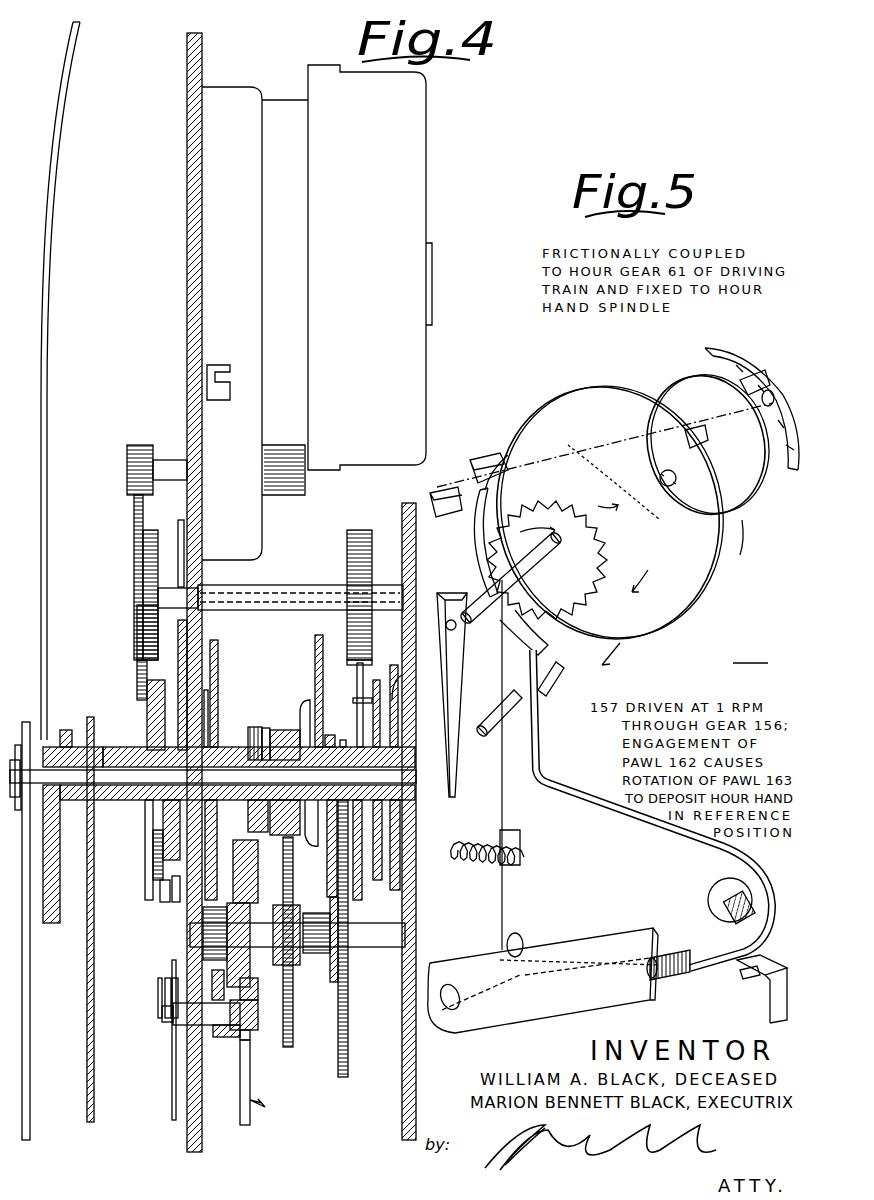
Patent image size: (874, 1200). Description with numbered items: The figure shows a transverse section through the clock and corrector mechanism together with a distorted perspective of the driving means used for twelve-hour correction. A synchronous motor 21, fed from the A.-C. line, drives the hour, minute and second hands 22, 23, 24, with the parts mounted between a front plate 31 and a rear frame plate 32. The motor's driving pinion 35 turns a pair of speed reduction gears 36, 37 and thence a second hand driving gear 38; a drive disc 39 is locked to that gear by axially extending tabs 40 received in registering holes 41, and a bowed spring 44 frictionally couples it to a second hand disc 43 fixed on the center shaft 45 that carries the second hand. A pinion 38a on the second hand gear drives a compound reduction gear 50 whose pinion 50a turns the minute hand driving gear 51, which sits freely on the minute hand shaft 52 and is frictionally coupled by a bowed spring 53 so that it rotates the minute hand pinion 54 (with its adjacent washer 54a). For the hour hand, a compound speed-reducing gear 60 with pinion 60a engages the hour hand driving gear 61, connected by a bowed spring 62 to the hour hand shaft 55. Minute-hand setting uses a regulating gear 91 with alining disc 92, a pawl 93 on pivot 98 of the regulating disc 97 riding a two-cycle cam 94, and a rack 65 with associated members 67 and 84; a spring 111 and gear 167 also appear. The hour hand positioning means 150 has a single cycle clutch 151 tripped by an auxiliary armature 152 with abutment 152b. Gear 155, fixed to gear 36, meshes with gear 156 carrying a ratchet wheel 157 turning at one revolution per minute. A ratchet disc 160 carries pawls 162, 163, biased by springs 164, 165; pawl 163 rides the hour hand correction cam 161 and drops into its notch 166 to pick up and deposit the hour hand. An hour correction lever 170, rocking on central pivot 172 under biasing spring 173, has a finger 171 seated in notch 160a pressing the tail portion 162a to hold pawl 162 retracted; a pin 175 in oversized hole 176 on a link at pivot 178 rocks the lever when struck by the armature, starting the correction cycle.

In FIG. 4, the synchronous motor 21 is at (284, 100).
In FIG. 4, the hour hand 22 is at (94, 1060).
In FIG. 5, the hour hand 22 is at (452, 750).
In FIG. 4, the minute hand 23 is at (47, 305).
In FIG. 4, the second hand 24 is at (30, 1080).
In FIG. 4, the front plate 31 is at (188, 240).
In FIG. 4, the rear frame plate 32 is at (402, 518).
In FIG. 4, the driving pinion 35 is at (140, 445).
In FIG. 4, the speed reduction gear 36 is at (134, 525).
In FIG. 4, the speed reduction gear 37 is at (347, 545).
In FIG. 4, the second hand driving gear 38 is at (362, 895).
In FIG. 4, the pinion 38a is at (346, 737).
In FIG. 4, the drive disc 39 is at (377, 690).
In FIG. 4, the tabs 40 is at (360, 690).
In FIG. 4, the holes 41 is at (357, 712).
In FIG. 4, the second hand disc 43 is at (400, 880).
In FIG. 4, the bowed spring 44 is at (396, 730).
In FIG. 4, the center shaft 45 is at (75, 800).
In FIG. 4, the compound reduction gear 50 is at (348, 1005).
In FIG. 4, the pinion 50a is at (325, 952).
In FIG. 4, the minute hand driving gear 51 is at (315, 642).
In FIG. 4, the minute hand shaft 52 is at (68, 750).
In FIG. 4, the bowed spring 53 is at (308, 712).
In FIG. 4, the minute hand pinion 54 is at (284, 730).
In FIG. 4, the clutch washer 54a is at (263, 735).
In FIG. 4, the hour hand shaft 55 is at (250, 745).
In FIG. 5, the hour hand shaft 55 is at (585, 545).
In FIG. 4, the compound speed-reducing gear 60 is at (288, 1047).
In FIG. 4, the pinion 60a is at (252, 903).
In FIG. 4, the hour hand driving gear 61 is at (218, 660).
In FIG. 4, the bowed spring 62 is at (208, 700).
In FIG. 4, the rack 65 is at (250, 1100).
In FIG. 4, the arm 67 is at (250, 1084).
In FIG. 4, the gear 84 is at (192, 942).
In FIG. 4, the regulating gear 91 is at (252, 990).
In FIG. 4, the alining disc 92 is at (255, 1010).
In FIG. 4, the pawl 93 is at (230, 1037).
In FIG. 4, the cam 94 is at (214, 985).
In FIG. 4, the regulating disc 97 is at (245, 1040).
In FIG. 4, the pivot 98 is at (212, 1020).
In FIG. 4, the spring 111 is at (418, 686).
In FIG. 5, the hour hand positioning means 150 is at (750, 655).
In FIG. 5, the single cycle clutch 151 is at (626, 657).
In FIG. 5, the auxiliary armature 152 is at (760, 1020).
In FIG. 5, the abutment 152b is at (748, 980).
In FIG. 4, the gear 155 is at (137, 640).
In FIG. 4, the gear 156 is at (148, 870).
In FIG. 4, the ratchet wheel 157 is at (150, 715).
In FIG. 5, the ratchet wheel 157 is at (585, 580).
In FIG. 4, the ratchet disc 160 is at (165, 902).
In FIG. 5, the ratchet disc 160 is at (672, 618).
In FIG. 5, the notch 160a is at (492, 455).
In FIG. 5, the hour hand correction cam 161 is at (735, 550).
In FIG. 4, the pawl 162 is at (137, 666).
In FIG. 5, the pawl 162 is at (500, 630).
In FIG. 5, the tail portion 162a is at (468, 530).
In FIG. 4, the pawl 163 is at (176, 902).
In FIG. 5, the pawl 163 is at (745, 360).
In FIG. 5, the spring 164 is at (432, 492).
In FIG. 5, the spring 165 is at (705, 350).
In FIG. 5, the notch 166 is at (752, 510).
In FIG. 4, the gear 167 is at (160, 855).
In FIG. 5, the hour correction lever 170 is at (565, 785).
In FIG. 5, the finger 171 is at (488, 452).
In FIG. 5, the central pivot 172 is at (560, 670).
In FIG. 5, the biasing spring 173 is at (475, 862).
In FIG. 5, the pin 175 is at (738, 925).
In FIG. 5, the oversized hole 176 is at (708, 895).
In FIG. 5, the pivot 178 is at (520, 938).